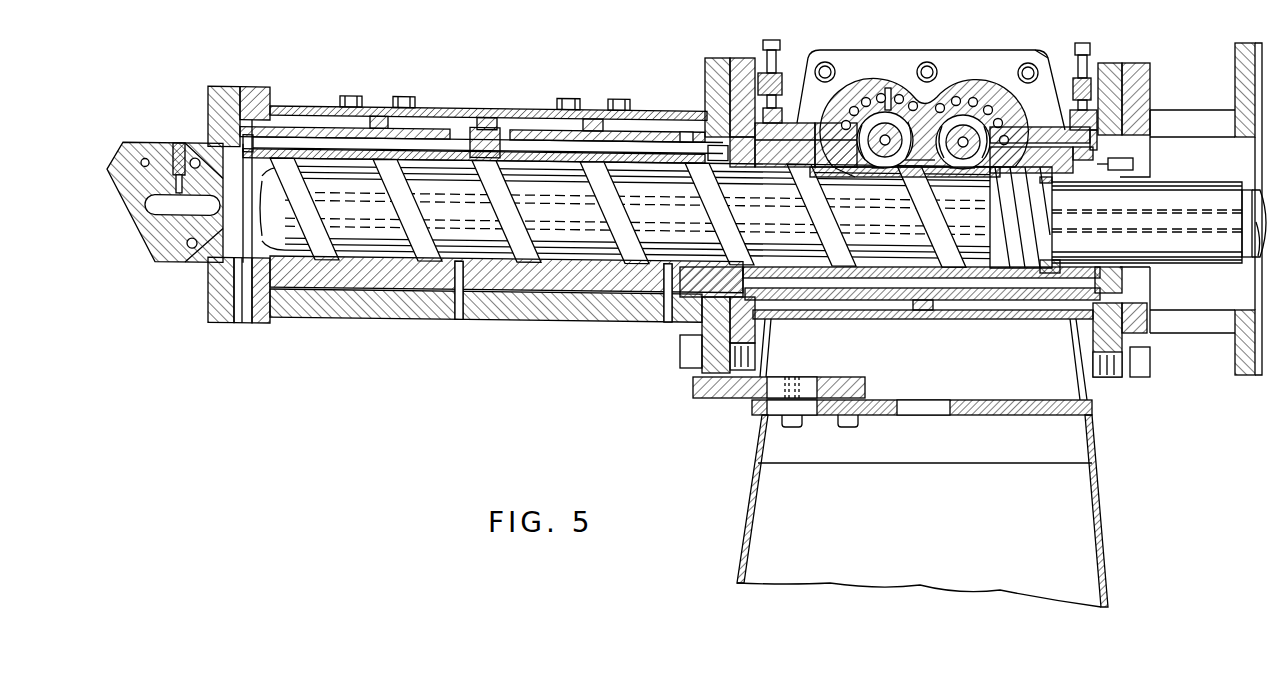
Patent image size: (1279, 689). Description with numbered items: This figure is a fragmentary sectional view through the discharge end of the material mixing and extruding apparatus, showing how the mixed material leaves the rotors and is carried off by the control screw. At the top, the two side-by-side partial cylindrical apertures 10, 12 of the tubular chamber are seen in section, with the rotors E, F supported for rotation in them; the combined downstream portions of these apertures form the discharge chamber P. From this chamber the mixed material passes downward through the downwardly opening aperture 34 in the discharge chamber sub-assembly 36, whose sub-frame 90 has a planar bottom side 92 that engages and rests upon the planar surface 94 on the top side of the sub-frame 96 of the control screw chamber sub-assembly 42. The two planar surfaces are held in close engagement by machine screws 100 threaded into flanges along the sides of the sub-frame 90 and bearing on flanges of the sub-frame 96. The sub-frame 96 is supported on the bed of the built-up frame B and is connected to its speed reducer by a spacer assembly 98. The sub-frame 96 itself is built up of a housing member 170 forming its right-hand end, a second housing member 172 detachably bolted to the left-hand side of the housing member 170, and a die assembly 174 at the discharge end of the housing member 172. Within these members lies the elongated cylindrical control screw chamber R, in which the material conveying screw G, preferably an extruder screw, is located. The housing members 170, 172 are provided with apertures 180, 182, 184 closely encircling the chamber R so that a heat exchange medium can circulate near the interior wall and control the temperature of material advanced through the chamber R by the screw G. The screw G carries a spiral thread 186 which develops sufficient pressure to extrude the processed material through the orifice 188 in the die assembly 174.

The partial cylindrical aperture 10 is at (847, 175).
The partial cylindrical aperture 12 is at (1033, 167).
The downwardly opening aperture 34 is at (960, 190).
The discharge chamber sub-assembly 36 is at (882, 50).
The control screw chamber sub-assembly 42 is at (446, 110).
The sub-frame 90 is at (1006, 52).
The planar bottom side 92 is at (797, 140).
The planar surface 94 is at (818, 140).
The sub-frame 96 is at (650, 322).
The spacer assembly 98 is at (1150, 94).
The machine screws 100 is at (765, 38).
The housing member 170 is at (755, 336).
The second housing member 172 is at (360, 322).
The die assembly 174 is at (208, 304).
The aperture 180 is at (985, 305).
The aperture 182 is at (657, 152).
The aperture 184 is at (307, 146).
The spiral thread 186 is at (500, 185).
The orifice 188 is at (133, 218).
The frame B is at (744, 463).
The rotor E is at (883, 176).
The rotor F is at (960, 172).
The material conveying screw G is at (490, 250).
The discharge chamber P is at (1005, 114).
The control screw chamber R is at (577, 255).